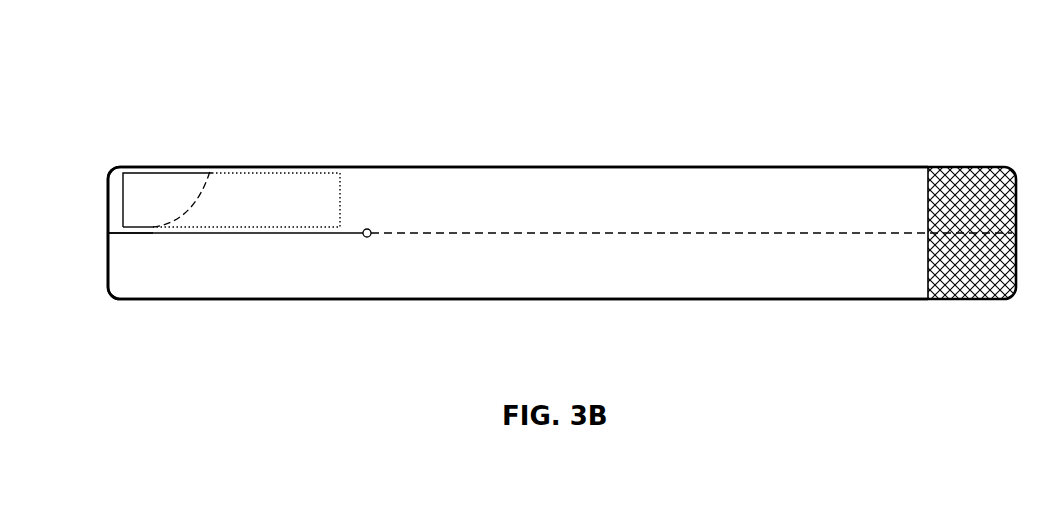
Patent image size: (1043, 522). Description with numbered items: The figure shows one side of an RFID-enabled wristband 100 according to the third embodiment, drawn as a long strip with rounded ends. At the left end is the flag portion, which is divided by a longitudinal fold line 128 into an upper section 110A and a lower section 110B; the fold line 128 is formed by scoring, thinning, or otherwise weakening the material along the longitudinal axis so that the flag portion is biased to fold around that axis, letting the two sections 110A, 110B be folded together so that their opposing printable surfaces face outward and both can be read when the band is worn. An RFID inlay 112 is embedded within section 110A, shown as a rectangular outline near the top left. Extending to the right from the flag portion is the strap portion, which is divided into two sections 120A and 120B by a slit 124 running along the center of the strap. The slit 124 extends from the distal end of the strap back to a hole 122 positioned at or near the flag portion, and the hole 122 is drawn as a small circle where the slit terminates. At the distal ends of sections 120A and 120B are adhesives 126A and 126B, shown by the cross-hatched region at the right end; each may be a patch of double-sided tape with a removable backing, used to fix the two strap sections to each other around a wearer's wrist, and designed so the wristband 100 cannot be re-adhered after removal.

The RFID-enabled wristband 100 is at (573, 115).
The section of flag portion 110A is at (113, 183).
The section of flag portion 110B is at (150, 286).
The RFID inlay 112 is at (270, 192).
The section of strap portion 120A is at (563, 188).
The section of strap portion 120B is at (562, 285).
The hole 122 is at (370, 238).
The slit 124 is at (645, 236).
The adhesive 126A is at (957, 175).
The adhesive 126B is at (957, 297).
The fold line 128 is at (127, 232).